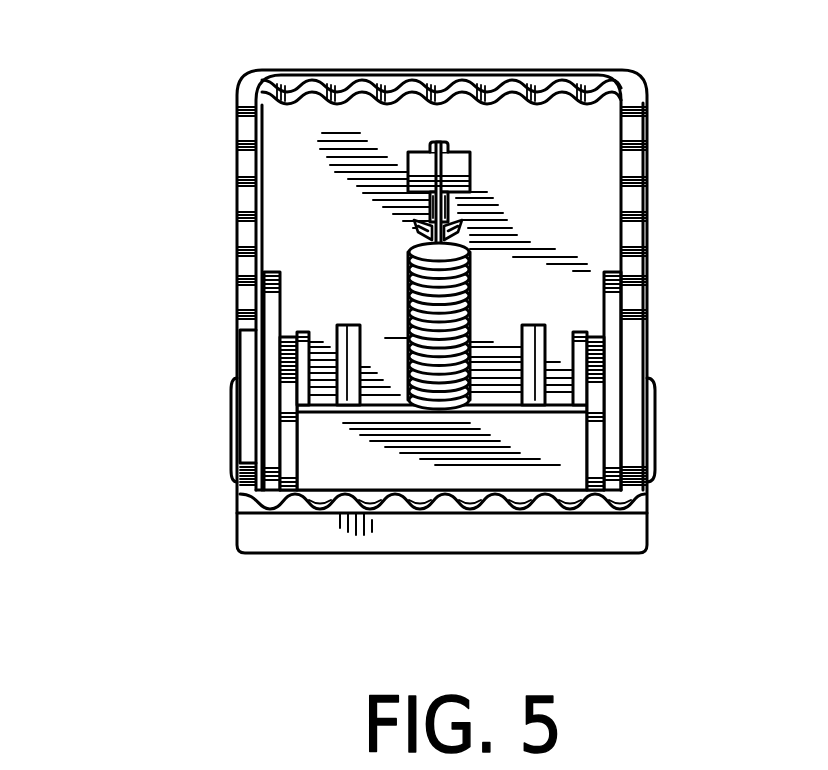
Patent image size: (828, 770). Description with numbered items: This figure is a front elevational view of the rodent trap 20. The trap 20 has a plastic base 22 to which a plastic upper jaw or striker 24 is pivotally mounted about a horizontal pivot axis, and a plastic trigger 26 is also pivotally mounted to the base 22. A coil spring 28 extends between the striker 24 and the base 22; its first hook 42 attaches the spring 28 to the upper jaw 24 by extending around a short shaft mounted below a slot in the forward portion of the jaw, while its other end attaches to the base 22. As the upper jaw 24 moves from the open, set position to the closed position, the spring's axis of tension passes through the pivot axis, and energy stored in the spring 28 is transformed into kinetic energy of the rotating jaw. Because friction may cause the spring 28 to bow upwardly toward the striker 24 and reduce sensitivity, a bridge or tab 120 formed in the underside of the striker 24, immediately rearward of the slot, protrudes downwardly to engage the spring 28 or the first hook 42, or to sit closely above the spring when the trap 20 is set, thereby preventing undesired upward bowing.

The rodent trap 20 is at (160, 104).
The base 22 is at (237, 530).
The upper jaw or striker 24 is at (322, 72).
The trigger 26 is at (587, 436).
The coil spring 28 is at (408, 300).
The first hook 42 is at (452, 170).
The bridge or tab 120 is at (418, 243).